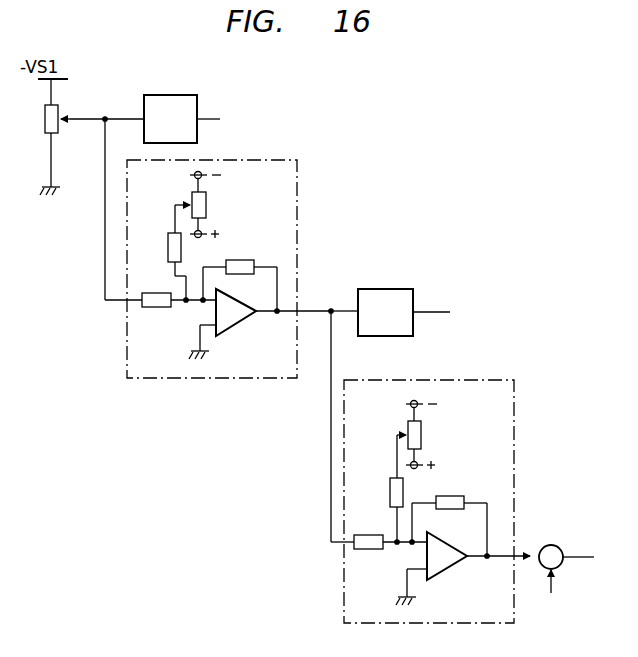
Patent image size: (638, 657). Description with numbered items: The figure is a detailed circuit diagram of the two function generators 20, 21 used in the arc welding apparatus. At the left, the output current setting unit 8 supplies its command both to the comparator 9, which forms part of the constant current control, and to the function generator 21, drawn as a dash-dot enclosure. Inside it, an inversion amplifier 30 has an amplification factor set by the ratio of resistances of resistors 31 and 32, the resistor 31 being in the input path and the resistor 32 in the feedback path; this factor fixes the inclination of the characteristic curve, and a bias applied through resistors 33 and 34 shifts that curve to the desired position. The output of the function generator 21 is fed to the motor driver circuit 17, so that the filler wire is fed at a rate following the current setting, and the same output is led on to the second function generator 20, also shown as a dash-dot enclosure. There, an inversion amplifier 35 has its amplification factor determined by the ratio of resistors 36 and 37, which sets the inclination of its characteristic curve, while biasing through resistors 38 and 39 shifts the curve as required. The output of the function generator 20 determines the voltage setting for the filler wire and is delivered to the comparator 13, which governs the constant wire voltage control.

The output current setting unit 8 is at (58, 112).
The comparator 9 is at (171, 95).
The comparator 13 is at (549, 545).
The motor driver circuit 17 is at (385, 289).
The function generator 20 is at (462, 380).
The function generator 21 is at (240, 160).
The inversion amplifier 30 is at (238, 323).
The resistor 31 is at (156, 307).
The resistor 32 is at (239, 260).
The resistor 33 is at (168, 247).
The resistor 34 is at (206, 206).
The inversion amplifier 35 is at (449, 567).
The resistor 36 is at (370, 549).
The resistor 37 is at (450, 496).
The resistor 38 is at (390, 492).
The resistor 39 is at (421, 436).